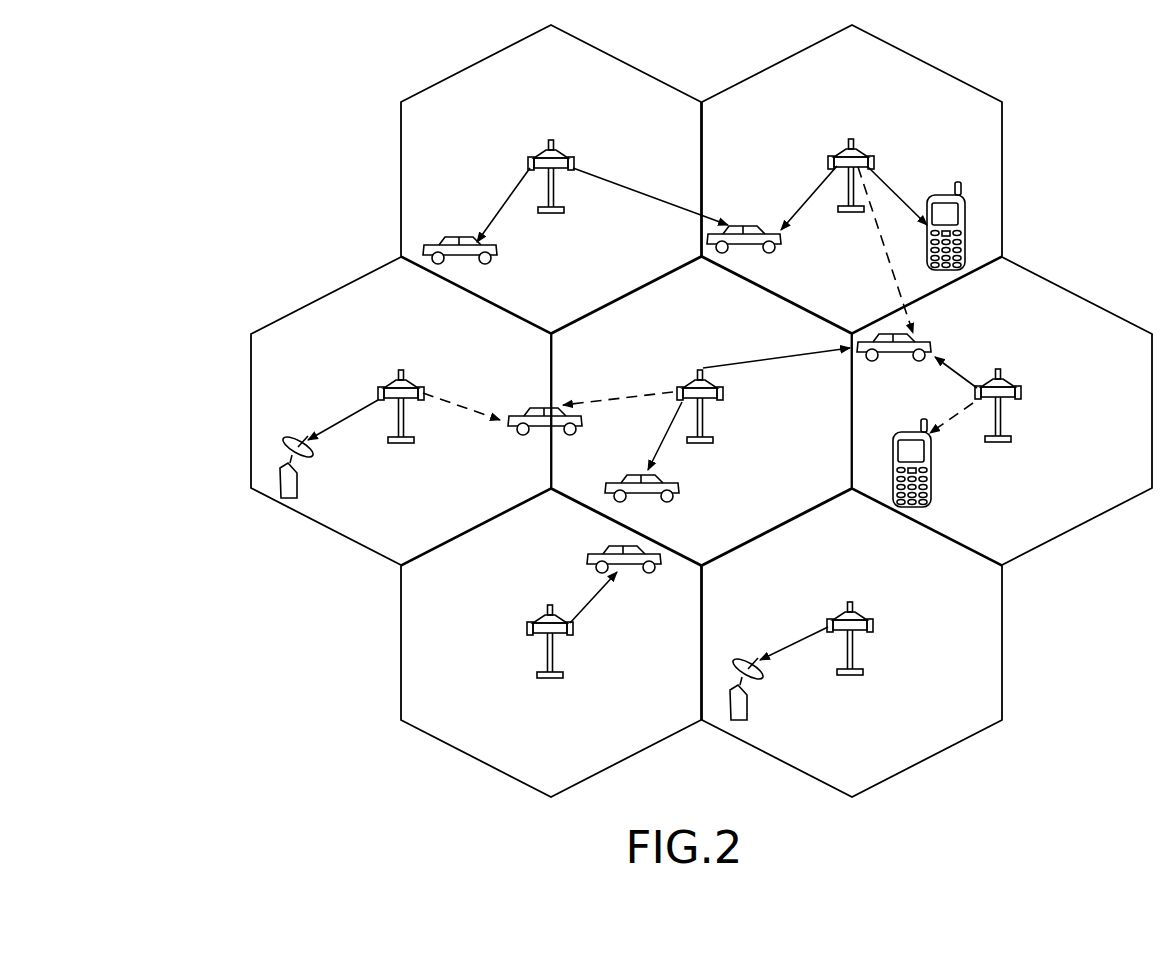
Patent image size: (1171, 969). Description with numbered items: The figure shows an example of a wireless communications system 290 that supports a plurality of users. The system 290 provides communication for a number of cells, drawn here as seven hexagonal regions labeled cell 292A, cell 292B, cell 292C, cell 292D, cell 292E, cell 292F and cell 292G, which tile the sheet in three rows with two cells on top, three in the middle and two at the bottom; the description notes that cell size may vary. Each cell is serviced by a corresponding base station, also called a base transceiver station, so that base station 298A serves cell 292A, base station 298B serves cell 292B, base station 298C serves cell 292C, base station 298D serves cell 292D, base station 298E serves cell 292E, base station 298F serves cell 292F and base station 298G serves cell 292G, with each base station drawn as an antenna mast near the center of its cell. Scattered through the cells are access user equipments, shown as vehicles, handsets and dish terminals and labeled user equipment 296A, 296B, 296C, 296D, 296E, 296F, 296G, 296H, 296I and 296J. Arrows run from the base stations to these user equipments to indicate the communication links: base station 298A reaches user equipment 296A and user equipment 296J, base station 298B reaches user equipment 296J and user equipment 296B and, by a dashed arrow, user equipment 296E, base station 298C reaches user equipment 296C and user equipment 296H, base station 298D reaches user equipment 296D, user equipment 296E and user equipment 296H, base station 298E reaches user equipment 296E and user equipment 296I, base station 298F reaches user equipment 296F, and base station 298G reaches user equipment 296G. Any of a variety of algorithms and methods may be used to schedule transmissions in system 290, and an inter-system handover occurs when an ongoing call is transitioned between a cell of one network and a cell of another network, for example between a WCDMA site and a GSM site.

The wireless communications system 290 is at (185, 110).
The cell 292A is at (574, 66).
The cell 292B is at (875, 66).
The cell 292C is at (424, 309).
The cell 292D is at (724, 309).
The cell 292E is at (1025, 309).
The cell 292F is at (574, 537).
The cell 292G is at (875, 537).
The base station 298A is at (551, 140).
The base station 298B is at (851, 139).
The base station 298C is at (401, 370).
The base station 298D is at (700, 370).
The base station 298E is at (998, 369).
The base station 298F is at (550, 605).
The base station 298G is at (850, 602).
The access user equipment 296A is at (497, 258).
The access user equipment 296B is at (945, 195).
The access user equipment 296C is at (297, 485).
The access user equipment 296D is at (680, 497).
The access user equipment 296E is at (890, 362).
The access user equipment 296F is at (660, 572).
The access user equipment 296G is at (750, 707).
The access user equipment 296H is at (512, 437).
The access user equipment 296I is at (931, 492).
The access user equipment 296J is at (750, 226).